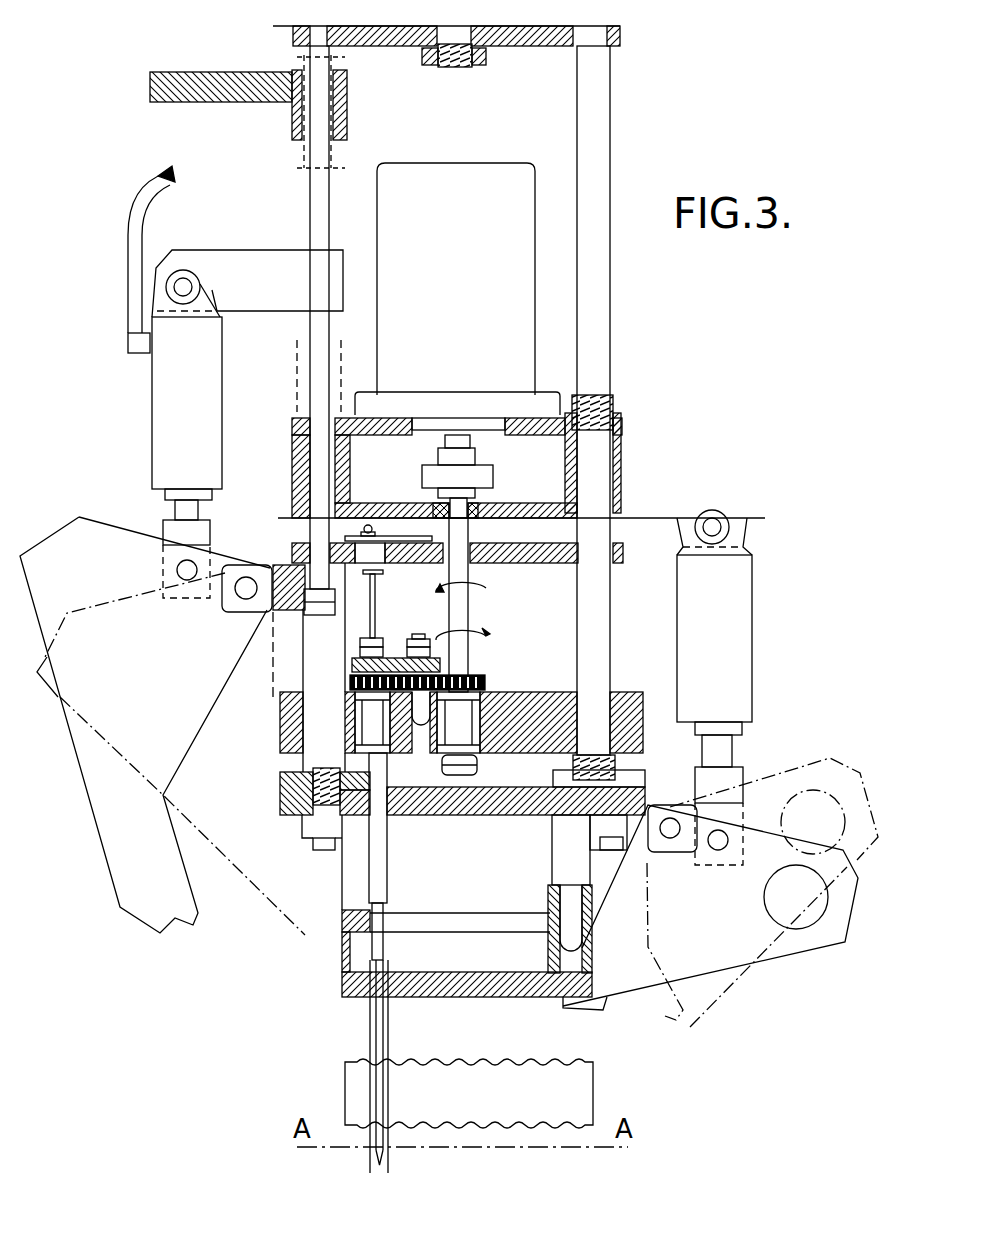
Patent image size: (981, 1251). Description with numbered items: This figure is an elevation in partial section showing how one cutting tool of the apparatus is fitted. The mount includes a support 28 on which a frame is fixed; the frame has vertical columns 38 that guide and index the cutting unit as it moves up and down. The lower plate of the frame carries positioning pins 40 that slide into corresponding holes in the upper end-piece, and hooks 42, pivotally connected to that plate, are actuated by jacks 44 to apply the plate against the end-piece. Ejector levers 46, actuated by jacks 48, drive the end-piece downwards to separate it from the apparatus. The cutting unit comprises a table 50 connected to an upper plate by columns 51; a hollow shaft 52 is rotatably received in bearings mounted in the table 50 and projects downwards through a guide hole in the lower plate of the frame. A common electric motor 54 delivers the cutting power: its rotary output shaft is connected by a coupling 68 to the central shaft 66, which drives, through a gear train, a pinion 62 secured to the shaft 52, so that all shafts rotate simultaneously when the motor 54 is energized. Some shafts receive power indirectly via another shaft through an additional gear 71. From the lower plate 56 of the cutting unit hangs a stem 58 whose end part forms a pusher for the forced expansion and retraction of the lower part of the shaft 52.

The support 28 is at (538, 437).
The vertical columns 38 is at (318, 645).
The positioning pins 40 is at (565, 920).
The hooks 42 is at (737, 953).
The jacks 44 is at (735, 677).
The ejector levers 46 is at (122, 838).
The jacks 48 is at (168, 396).
The table 50 is at (300, 732).
The columns 51 is at (600, 652).
The hollow shaft 52 is at (377, 885).
The electric motor 54 is at (483, 192).
The lower plate 56 is at (298, 548).
The stem 58 is at (375, 595).
The pinion 62 is at (350, 686).
The central shaft 66 is at (460, 612).
The coupling 68 is at (433, 473).
The additional gear 71 is at (352, 665).